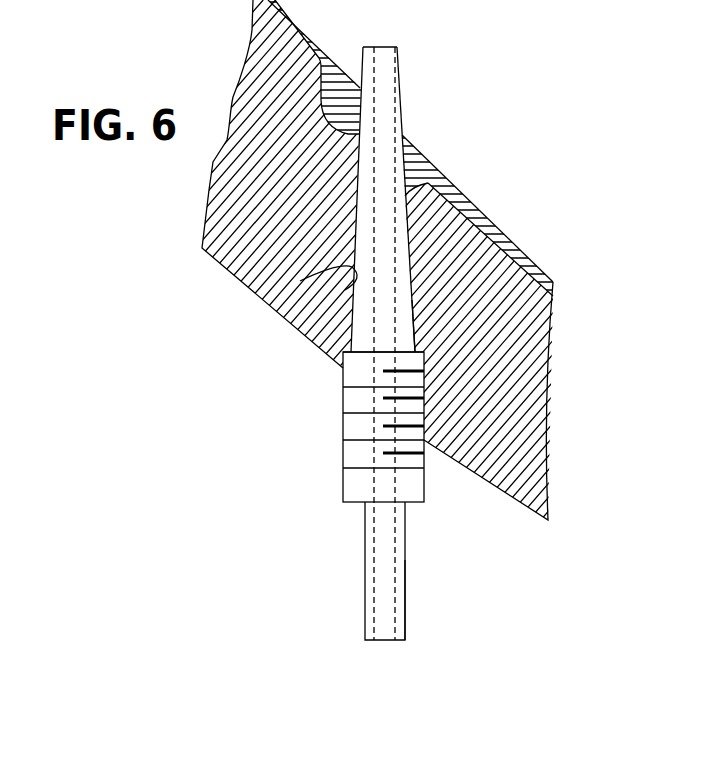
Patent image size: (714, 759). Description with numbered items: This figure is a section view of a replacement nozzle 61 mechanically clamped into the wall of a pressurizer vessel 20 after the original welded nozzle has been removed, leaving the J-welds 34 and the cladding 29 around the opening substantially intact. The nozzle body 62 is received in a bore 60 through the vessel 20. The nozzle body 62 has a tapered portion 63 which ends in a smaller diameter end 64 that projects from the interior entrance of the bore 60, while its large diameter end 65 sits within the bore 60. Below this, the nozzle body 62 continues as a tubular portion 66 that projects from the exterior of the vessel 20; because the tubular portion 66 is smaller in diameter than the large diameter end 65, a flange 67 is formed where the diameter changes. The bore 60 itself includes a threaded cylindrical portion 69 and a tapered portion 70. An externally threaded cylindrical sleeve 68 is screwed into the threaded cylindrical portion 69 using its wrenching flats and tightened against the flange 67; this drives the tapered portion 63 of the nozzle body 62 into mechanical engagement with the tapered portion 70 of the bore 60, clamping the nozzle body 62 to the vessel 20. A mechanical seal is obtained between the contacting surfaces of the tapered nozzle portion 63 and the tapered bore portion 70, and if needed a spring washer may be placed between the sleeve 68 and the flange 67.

The vessel 20 is at (534, 336).
The cladding 29 is at (465, 208).
The J-welds 34 is at (413, 150).
The tapered portion 63 is at (404, 193).
The bore 60 is at (354, 215).
The smaller diameter end 64 is at (394, 60).
The nozzle body 62 is at (394, 315).
The large diameter end 65 is at (418, 345).
The flange 67 is at (363, 353).
The externally threaded cylindrical sleeve 68 is at (358, 432).
The threaded cylindrical portion 69 is at (427, 413).
The replacement nozzle 61 is at (356, 523).
The tubular portion 66 is at (407, 592).
The tapered portion 70 is at (345, 290).